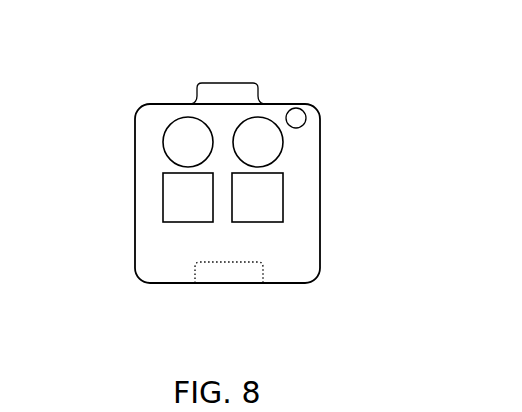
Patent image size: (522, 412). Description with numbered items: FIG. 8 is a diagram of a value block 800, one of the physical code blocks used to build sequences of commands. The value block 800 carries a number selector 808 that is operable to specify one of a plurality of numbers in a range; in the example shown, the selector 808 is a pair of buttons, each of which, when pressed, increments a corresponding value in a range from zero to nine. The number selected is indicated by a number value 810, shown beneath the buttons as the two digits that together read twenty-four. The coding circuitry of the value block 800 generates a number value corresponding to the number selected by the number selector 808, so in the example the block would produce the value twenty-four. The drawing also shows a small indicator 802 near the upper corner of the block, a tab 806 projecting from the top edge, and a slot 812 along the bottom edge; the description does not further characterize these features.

The value block 800 is at (313, 202).
The indicator light 802 is at (317, 110).
The top tab 806 is at (237, 82).
The number selector 808 is at (148, 135).
The number value 810 is at (148, 200).
The bottom connector slot 812 is at (197, 270).